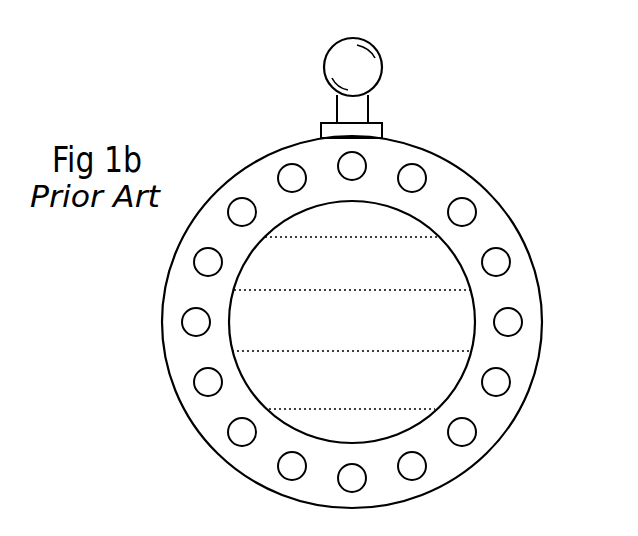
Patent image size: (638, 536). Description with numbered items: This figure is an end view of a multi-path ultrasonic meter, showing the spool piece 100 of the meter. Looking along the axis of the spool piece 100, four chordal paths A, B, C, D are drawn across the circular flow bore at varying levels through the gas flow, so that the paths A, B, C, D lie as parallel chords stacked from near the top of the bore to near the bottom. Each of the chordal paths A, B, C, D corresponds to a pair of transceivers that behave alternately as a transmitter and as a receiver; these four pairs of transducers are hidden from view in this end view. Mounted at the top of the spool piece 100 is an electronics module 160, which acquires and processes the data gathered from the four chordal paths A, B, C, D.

The spool piece 100 is at (476, 184).
The electronics module 160 is at (376, 52).
The chordal path A is at (352, 225).
The chordal path B is at (352, 280).
The chordal path C is at (352, 362).
The chordal path D is at (352, 421).